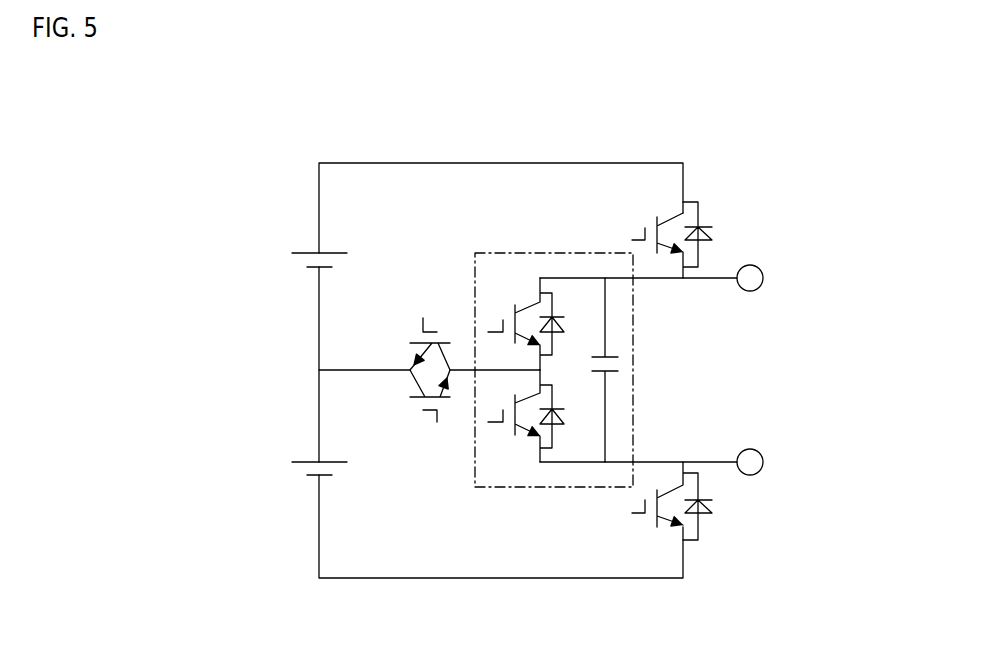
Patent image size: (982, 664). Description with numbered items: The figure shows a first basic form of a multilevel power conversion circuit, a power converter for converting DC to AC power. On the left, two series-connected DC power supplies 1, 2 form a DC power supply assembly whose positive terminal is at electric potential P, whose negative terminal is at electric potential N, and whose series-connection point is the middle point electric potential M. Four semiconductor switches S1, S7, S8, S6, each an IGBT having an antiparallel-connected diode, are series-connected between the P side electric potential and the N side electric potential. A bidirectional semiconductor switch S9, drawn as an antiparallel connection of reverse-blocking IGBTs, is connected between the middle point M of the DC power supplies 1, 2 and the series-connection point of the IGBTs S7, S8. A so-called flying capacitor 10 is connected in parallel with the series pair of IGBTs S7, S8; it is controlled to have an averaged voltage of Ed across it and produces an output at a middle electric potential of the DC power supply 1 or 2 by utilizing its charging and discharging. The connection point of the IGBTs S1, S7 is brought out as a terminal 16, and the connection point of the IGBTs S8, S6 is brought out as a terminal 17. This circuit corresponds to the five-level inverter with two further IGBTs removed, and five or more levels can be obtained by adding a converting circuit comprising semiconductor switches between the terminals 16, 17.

The DC power supply 1 is at (317, 243).
The DC power supply 2 is at (316, 454).
The flying capacitor 10 is at (597, 370).
The terminal 16 is at (770, 278).
The terminal 17 is at (770, 462).
The semiconductor switch S1 is at (672, 229).
The semiconductor switch S6 is at (672, 512).
The semiconductor switch S7 is at (526, 320).
The semiconductor switch S8 is at (526, 422).
The bidirectional semiconductor switch S9 is at (418, 370).